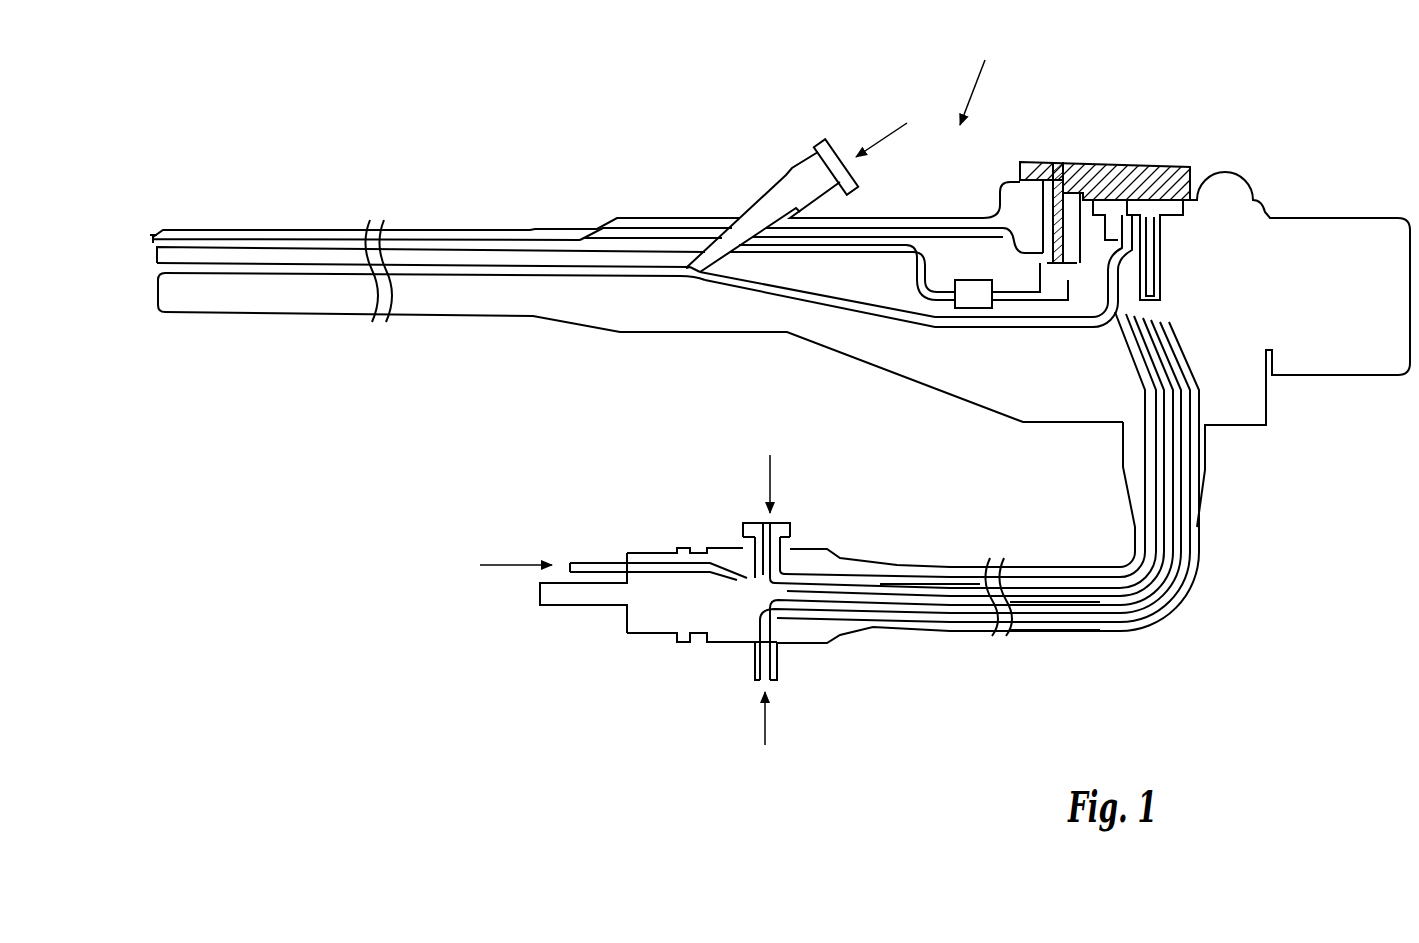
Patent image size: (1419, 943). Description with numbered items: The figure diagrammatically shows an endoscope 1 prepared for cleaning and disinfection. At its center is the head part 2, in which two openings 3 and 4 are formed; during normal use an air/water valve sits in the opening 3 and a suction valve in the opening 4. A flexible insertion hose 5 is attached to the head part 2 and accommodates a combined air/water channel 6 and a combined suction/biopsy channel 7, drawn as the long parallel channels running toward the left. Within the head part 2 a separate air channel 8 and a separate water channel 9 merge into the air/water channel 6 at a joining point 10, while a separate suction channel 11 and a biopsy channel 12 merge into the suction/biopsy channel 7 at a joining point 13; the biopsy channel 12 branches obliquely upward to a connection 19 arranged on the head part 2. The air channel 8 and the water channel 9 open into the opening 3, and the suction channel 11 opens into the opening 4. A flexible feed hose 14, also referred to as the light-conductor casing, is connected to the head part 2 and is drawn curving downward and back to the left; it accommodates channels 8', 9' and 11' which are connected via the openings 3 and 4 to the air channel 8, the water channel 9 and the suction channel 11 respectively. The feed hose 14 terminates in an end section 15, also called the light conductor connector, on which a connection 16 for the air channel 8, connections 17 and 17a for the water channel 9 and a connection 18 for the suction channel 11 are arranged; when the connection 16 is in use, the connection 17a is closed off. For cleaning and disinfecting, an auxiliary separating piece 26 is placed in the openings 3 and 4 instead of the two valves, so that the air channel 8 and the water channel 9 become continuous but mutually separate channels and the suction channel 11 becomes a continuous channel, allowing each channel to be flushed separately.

The endoscope 1 is at (981, 77).
The head part 2 is at (1272, 198).
The opening 3 is at (1043, 240).
The opening 4 is at (1150, 238).
The flexible insertion hose 5 is at (308, 230).
The combined air/water channel 6 is at (200, 240).
The combined suction/biopsy channel 7 is at (248, 270).
The air channel 8 is at (897, 200).
The water channel 9 is at (556, 326).
The joining point 10 is at (566, 240).
The suction channel 11 is at (916, 321).
The biopsy channel 12 is at (762, 217).
The joining point 13 is at (692, 262).
The flexible feed hose 14 is at (1170, 620).
The end section 15 is at (630, 638).
The connection 16 is at (787, 540).
The connection 17 is at (595, 563).
The connection 17a is at (745, 538).
The connection 18 is at (750, 667).
The connection 19 is at (830, 146).
The auxiliary separating piece 26 is at (1095, 168).
The channel 8' is at (1055, 543).
The channel 9' is at (930, 536).
The channel 11' is at (1055, 668).